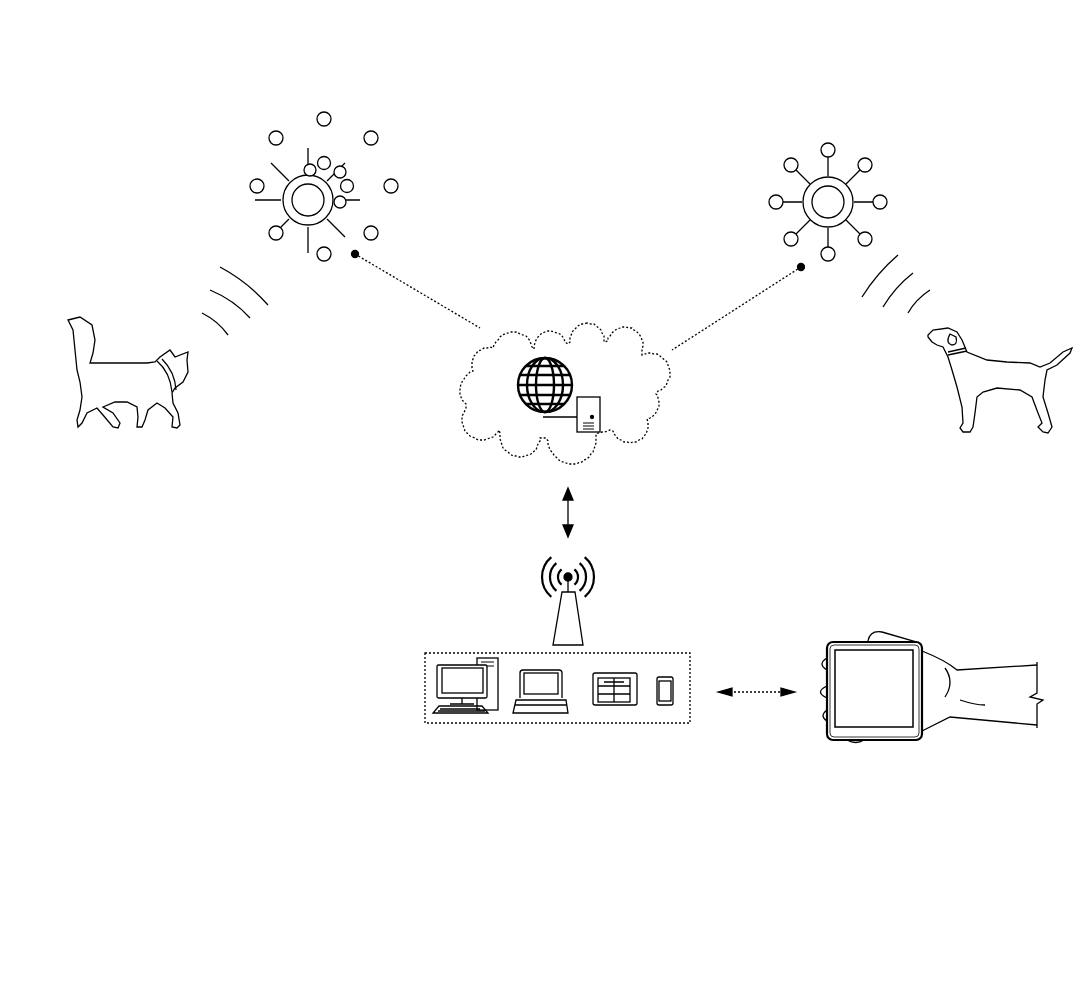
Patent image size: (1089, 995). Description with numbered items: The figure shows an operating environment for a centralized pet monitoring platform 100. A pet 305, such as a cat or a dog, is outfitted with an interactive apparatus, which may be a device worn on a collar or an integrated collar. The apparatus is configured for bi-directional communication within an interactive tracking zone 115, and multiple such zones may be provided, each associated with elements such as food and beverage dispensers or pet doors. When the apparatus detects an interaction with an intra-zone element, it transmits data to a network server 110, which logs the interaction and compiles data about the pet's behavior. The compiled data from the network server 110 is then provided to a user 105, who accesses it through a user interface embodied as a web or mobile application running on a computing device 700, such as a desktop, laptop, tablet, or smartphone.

The pet monitoring platform 100 is at (570, 437).
The interactive tracking zone 115 is at (750, 183).
The pet 305 is at (570, 344).
The network server 110 is at (565, 393).
The computing device 700 is at (557, 640).
The user 105 is at (932, 682).